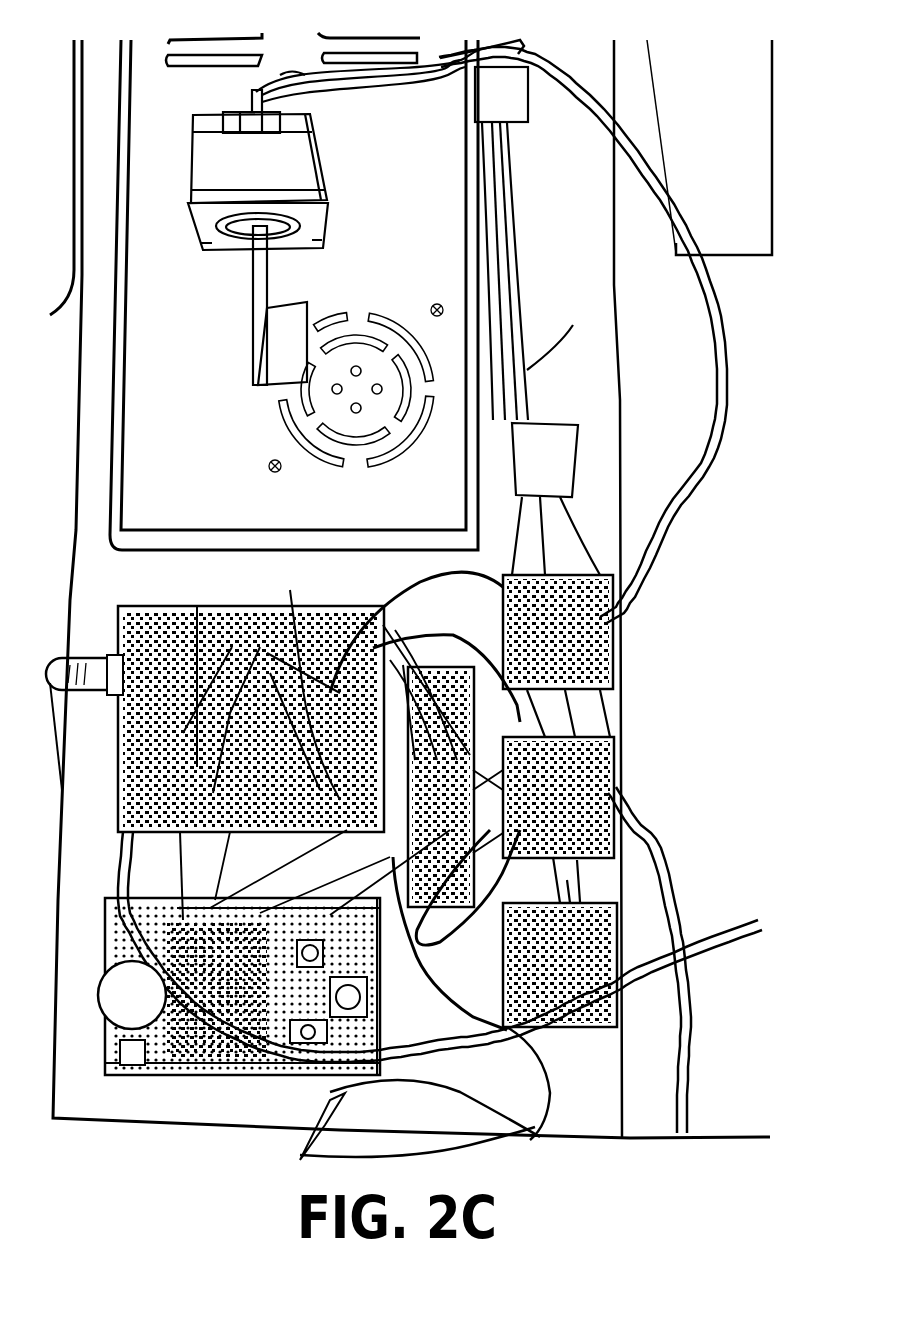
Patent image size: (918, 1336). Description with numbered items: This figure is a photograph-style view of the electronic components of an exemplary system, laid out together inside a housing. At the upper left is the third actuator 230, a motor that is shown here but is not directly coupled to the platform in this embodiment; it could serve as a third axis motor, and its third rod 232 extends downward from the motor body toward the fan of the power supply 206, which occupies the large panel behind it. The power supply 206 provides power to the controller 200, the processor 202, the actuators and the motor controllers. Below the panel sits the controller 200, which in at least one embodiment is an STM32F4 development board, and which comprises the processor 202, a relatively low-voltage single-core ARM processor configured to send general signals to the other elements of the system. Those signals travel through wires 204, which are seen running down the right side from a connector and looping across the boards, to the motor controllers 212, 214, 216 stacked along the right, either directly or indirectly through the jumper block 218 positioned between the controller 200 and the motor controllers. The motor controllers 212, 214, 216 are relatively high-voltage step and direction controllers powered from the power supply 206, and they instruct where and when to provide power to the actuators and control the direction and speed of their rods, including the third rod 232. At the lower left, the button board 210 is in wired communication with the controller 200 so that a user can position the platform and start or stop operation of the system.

The controller 200 is at (136, 804).
The processor 202 is at (351, 732).
The wires 204 is at (551, 513).
The power supply 206 is at (150, 512).
The button board 210 is at (206, 985).
The motor controller 212 is at (530, 646).
The motor controller 214 is at (530, 808).
The motor controller 216 is at (536, 977).
The jumper block 218 is at (462, 828).
The third actuator 230 is at (277, 182).
The third rod 232 is at (348, 273).